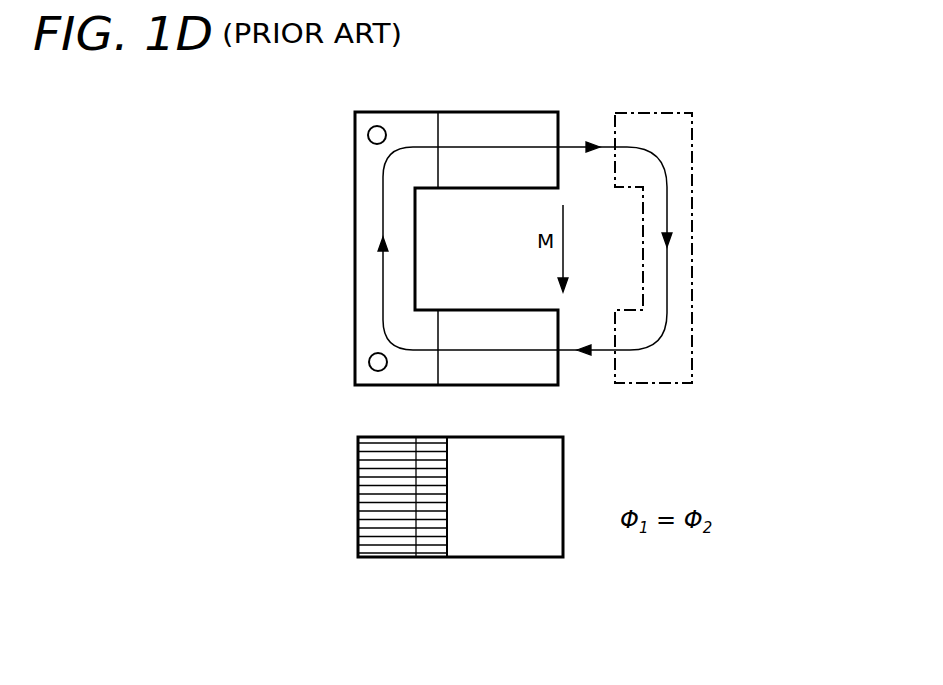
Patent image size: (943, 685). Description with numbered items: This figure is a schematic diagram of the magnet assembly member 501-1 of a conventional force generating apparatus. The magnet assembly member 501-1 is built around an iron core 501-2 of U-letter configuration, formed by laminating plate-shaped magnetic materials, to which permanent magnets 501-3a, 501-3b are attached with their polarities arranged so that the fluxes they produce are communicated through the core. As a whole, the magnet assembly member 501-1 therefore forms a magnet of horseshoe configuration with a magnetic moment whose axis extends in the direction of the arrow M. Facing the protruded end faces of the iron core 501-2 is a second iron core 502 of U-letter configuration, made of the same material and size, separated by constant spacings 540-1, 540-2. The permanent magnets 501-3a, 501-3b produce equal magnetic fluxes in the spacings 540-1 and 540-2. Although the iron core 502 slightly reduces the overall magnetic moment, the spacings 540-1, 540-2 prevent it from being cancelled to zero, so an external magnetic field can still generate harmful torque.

The permanent magnet assembly member 501-1 is at (382, 329).
The iron core 501-2 is at (355, 196).
The permanent magnet 501-3a is at (477, 112).
The permanent magnet 501-3b is at (480, 386).
The iron core 502 is at (692, 350).
The spacing 540-1 is at (593, 133).
The spacing 540-2 is at (585, 363).